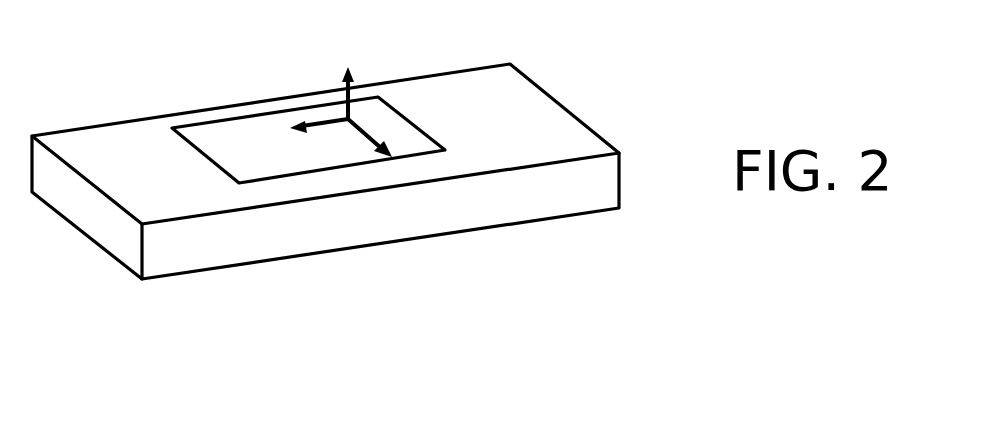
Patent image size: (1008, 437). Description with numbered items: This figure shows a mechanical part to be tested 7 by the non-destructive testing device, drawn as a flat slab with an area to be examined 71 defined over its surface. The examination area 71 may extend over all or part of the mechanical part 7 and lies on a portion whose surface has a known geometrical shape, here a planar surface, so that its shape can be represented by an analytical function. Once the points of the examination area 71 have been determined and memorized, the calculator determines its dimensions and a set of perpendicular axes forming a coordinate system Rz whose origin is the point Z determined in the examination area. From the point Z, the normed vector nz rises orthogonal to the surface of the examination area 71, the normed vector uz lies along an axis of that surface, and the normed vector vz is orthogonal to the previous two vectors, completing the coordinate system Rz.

The mechanical part to be tested 7 is at (620, 180).
The examination area 71 is at (263, 138).
The point Z is at (352, 118).
The coordinate system Rz is at (329, 108).
The normed vector nz is at (352, 79).
The normed vector vz is at (322, 124).
The normed vector uz is at (381, 146).